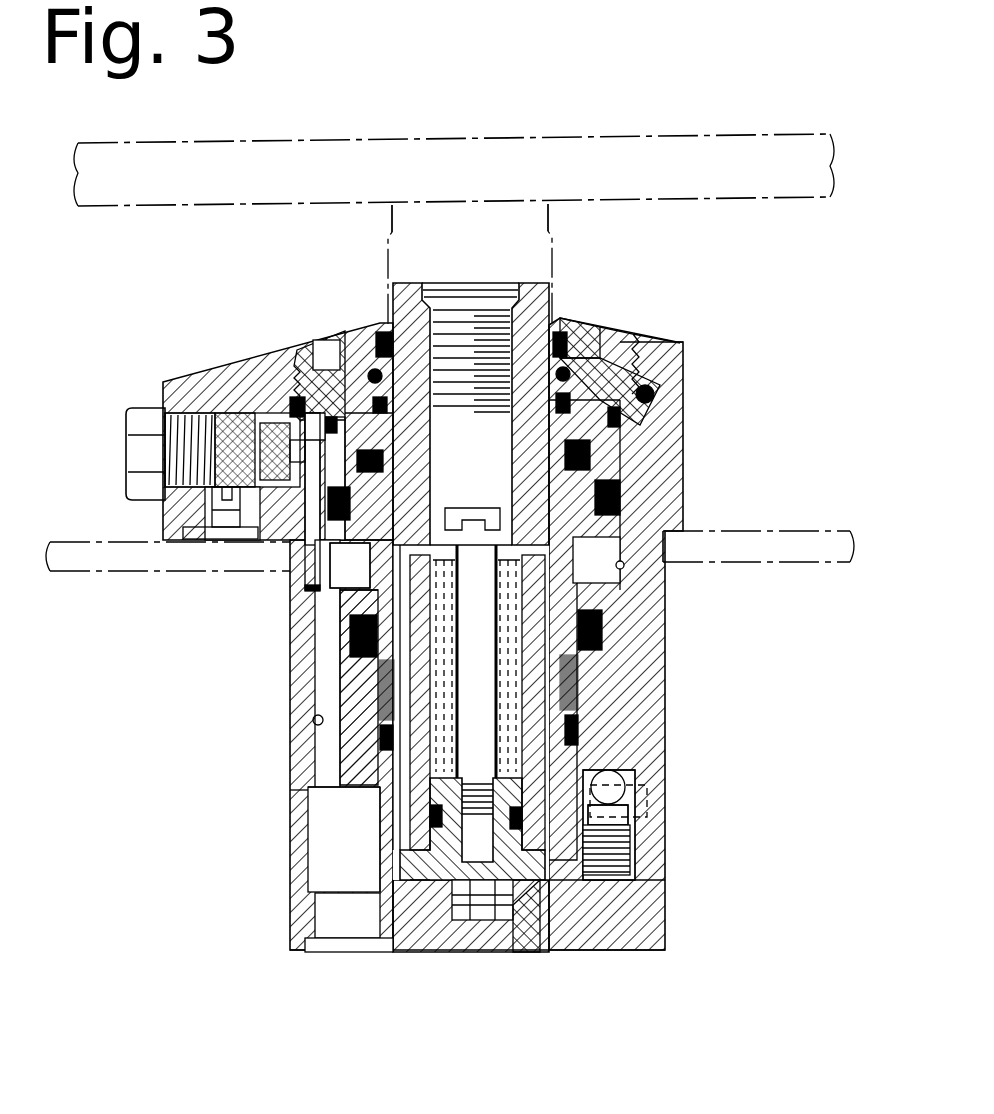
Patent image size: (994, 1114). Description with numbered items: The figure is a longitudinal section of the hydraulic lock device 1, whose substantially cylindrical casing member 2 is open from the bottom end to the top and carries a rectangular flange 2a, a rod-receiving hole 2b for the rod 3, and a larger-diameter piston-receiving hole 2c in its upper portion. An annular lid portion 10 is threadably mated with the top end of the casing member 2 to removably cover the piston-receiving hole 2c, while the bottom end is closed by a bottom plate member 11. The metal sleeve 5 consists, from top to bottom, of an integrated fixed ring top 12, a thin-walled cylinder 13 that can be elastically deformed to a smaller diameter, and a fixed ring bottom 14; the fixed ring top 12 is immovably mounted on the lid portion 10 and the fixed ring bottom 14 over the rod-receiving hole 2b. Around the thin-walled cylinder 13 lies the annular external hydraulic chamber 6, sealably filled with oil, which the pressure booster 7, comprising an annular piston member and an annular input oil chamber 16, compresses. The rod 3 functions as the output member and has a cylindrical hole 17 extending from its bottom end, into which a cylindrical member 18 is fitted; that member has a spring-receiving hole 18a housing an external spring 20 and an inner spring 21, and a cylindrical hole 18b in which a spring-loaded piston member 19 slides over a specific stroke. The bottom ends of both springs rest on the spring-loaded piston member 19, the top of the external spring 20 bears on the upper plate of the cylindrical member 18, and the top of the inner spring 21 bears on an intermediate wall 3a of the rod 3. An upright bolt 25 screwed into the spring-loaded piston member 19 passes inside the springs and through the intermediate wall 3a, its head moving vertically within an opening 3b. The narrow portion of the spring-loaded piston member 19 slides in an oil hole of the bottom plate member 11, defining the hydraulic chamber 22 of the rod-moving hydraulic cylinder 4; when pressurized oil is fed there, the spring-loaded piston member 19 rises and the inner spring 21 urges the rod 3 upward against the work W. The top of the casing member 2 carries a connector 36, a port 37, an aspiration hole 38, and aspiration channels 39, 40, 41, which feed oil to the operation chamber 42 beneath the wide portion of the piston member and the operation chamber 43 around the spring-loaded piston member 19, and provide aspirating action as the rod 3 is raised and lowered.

The work W is at (626, 140).
The hydraulic lock device 1 is at (812, 258).
The casing member 2 is at (676, 800).
The flange 2a is at (668, 452).
The rod-receiving hole 2b is at (292, 784).
The piston-receiving hole 2c is at (622, 560).
The rod 3 is at (535, 291).
The intermediate wall 3a is at (474, 520).
The opening 3b is at (451, 413).
The rod-moving hydraulic cylinder 4 is at (440, 902).
The metal sleeve 5 is at (406, 488).
The external hydraulic chamber 6 is at (392, 696).
The pressure booster 7 is at (347, 412).
The annular lid portion 10 is at (354, 340).
The bottom plate member 11 is at (656, 916).
The fixed ring top 12 is at (560, 388).
The thin-walled cylinder 13 is at (520, 515).
The fixed ring bottom 14 is at (600, 776).
The annular input oil chamber 16 is at (300, 450).
The cylindrical hole 17 is at (392, 672).
The cylindrical member 18 is at (383, 793).
The spring-receiving hole 18a is at (601, 627).
The cylindrical hole 18b is at (632, 856).
The spring-loaded piston member 19 is at (494, 888).
The external spring 20 is at (596, 678).
The inner spring 21 is at (582, 694).
The hydraulic chamber 22 is at (477, 917).
The upright bolt 25 is at (494, 672).
The connector 36 is at (134, 452).
The port 37 is at (233, 413).
The aspiration hole 38 is at (222, 524).
The aspiration channel 39 is at (282, 541).
The aspiration channel 40 is at (322, 718).
The aspiration channel 41 is at (400, 800).
The operation chamber 42 is at (343, 582).
The operation chamber 43 is at (396, 852).